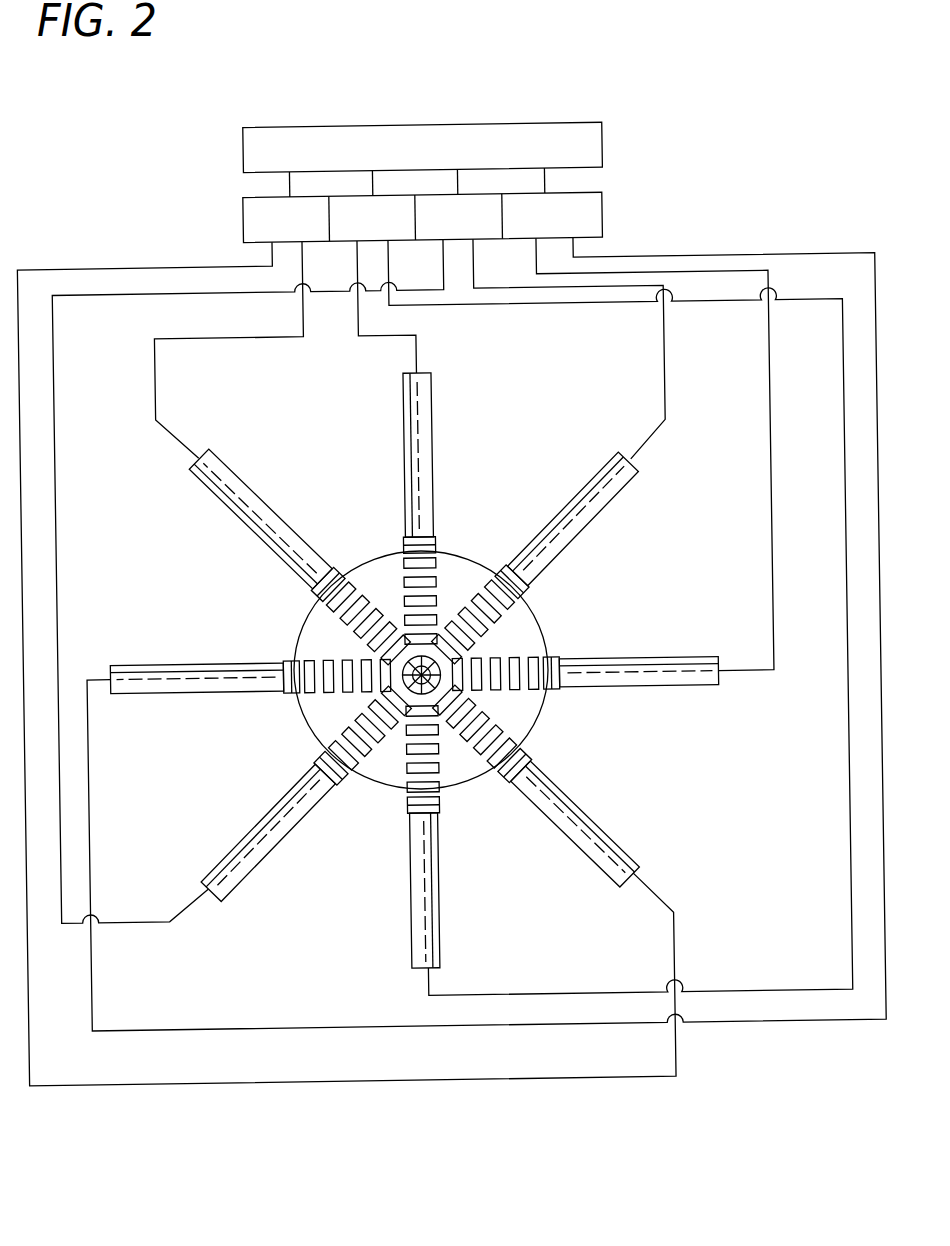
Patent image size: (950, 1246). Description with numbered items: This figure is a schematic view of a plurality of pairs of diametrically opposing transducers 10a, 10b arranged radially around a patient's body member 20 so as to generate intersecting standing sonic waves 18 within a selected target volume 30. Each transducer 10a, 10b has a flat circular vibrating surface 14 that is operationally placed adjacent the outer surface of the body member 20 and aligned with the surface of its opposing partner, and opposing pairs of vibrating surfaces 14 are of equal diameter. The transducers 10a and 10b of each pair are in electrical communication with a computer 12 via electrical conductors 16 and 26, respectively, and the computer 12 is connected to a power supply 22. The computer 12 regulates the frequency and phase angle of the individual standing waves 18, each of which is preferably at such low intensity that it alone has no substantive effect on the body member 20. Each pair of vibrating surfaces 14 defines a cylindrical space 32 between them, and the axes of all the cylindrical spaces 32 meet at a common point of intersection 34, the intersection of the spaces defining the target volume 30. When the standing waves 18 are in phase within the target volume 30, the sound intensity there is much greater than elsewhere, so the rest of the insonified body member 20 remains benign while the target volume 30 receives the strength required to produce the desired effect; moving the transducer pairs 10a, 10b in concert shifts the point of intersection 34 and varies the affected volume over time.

The transducer 10a is at (410, 422).
The transducer 10b is at (610, 482).
The computer 12 is at (305, 231).
The flat circular vibrating surface 14 is at (428, 543).
The electrical conductor 16 is at (143, 293).
The standing sonic wave 18 is at (345, 572).
The body member 20 is at (540, 636).
The power supply 22 is at (601, 125).
The electrical conductor 26 is at (150, 266).
The target volume 30 is at (418, 645).
The cylindrical space 32 is at (446, 797).
The point of intersection 34 is at (527, 612).